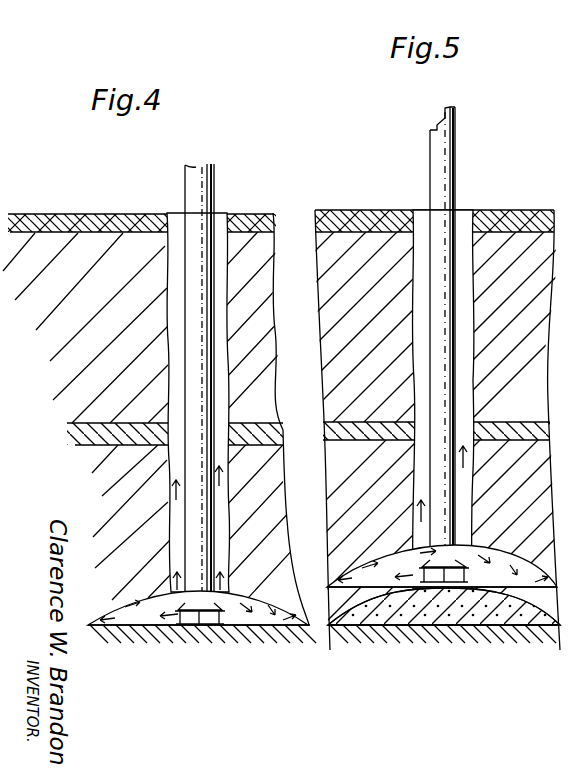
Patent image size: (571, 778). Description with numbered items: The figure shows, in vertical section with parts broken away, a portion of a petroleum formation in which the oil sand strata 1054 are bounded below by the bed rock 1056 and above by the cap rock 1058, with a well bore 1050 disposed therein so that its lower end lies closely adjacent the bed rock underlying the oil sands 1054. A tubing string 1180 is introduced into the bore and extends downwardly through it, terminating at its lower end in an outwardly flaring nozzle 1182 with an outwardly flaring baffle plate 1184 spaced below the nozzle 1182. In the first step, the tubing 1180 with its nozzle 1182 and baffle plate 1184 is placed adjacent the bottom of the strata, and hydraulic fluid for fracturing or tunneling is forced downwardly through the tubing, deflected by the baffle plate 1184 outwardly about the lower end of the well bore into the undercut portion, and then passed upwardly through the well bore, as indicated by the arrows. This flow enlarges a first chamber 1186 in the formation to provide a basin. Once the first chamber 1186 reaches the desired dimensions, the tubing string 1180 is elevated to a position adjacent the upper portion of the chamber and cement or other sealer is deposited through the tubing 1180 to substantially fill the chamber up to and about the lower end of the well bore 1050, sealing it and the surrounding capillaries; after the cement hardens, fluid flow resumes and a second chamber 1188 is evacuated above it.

In FIG. 4, the tubing string 1180 is at (195, 175).
In FIG. 5, the tubing string 1180 is at (446, 153).
In FIG. 4, the well bore 1050 is at (243, 246).
In FIG. 5, the well bore 1050 is at (478, 210).
In FIG. 4, the cap rock 1058 is at (250, 430).
In FIG. 5, the cap rock 1058 is at (343, 433).
In FIG. 4, the oil sand strata 1054 is at (257, 503).
In FIG. 5, the oil sand strata 1054 is at (347, 498).
In FIG. 4, the first chamber 1186 is at (147, 610).
In FIG. 4, the nozzle 1182 is at (195, 626).
In FIG. 5, the nozzle 1182 is at (444, 571).
In FIG. 4, the baffle plate 1184 is at (199, 653).
In FIG. 4, the bed rock 1056 is at (280, 630).
In FIG. 5, the bed rock 1056 is at (357, 630).
In FIG. 5, the second chamber 1188 is at (371, 567).